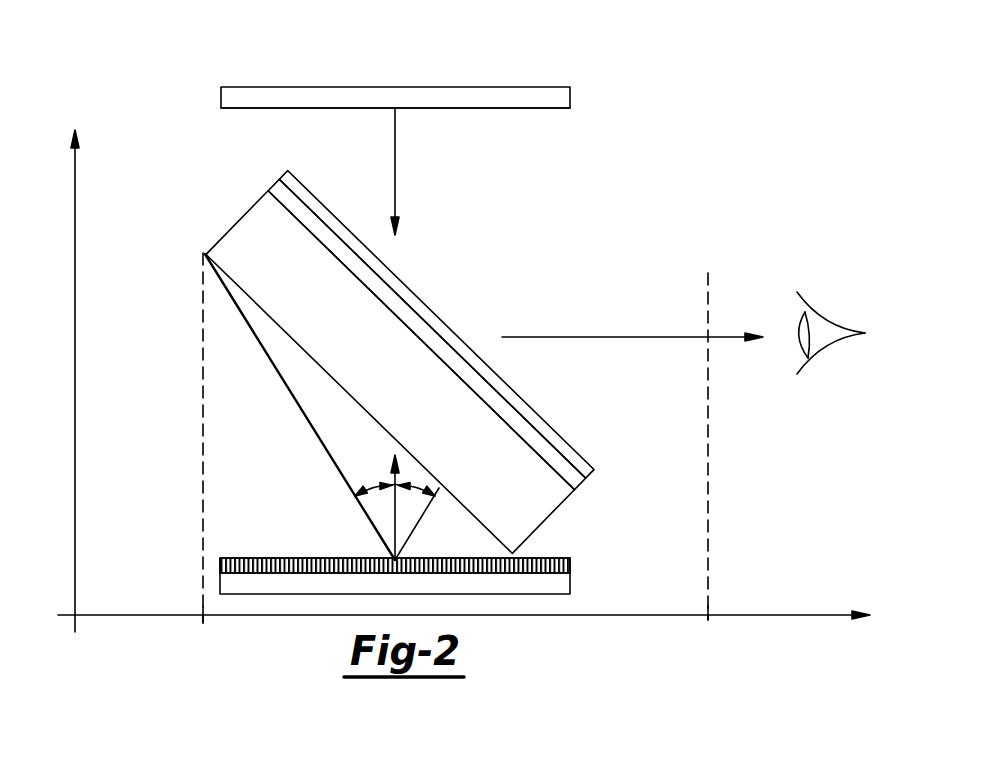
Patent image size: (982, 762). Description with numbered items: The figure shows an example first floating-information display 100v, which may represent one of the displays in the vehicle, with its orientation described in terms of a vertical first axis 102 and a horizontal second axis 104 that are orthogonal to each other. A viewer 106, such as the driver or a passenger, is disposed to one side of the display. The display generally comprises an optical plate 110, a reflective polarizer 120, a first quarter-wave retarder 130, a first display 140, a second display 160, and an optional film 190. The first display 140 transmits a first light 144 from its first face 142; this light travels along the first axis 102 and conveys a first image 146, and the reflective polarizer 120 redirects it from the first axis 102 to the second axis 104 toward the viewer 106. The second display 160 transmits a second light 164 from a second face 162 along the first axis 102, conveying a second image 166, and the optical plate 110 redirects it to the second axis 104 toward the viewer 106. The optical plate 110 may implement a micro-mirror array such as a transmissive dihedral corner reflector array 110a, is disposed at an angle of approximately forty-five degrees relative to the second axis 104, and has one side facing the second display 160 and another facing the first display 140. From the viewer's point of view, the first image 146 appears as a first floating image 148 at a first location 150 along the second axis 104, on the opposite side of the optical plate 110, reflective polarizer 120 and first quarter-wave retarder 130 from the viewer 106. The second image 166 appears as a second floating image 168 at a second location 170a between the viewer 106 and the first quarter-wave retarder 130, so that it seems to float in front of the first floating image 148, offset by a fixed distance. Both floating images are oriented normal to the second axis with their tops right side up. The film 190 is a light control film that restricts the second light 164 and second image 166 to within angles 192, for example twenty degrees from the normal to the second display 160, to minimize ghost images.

The first floating-information display 100v is at (263, 60).
The first axis 102 is at (53, 378).
The second axis 104 is at (471, 634).
The viewer 106 is at (828, 322).
The optical plate 110 is at (330, 372).
The transmissive dihedral corner reflector array 110a is at (241, 217).
The reflective polarizer 120 is at (271, 182).
The first quarter-wave retarder 130 is at (284, 168).
The first display 140 is at (318, 87).
The first face 142 is at (533, 108).
The first light 144 is at (457, 171).
The first image 146 is at (395, 178).
The first floating image 148 is at (203, 400).
The first location 150 is at (205, 632).
The second display 160 is at (570, 583).
The second face 162 is at (510, 573).
The second light 164 is at (322, 407).
The second image 166 is at (392, 480).
The second floating image 168 is at (708, 403).
The second location 170a is at (714, 632).
The film 190 is at (570, 566).
The angles 192 is at (368, 498).